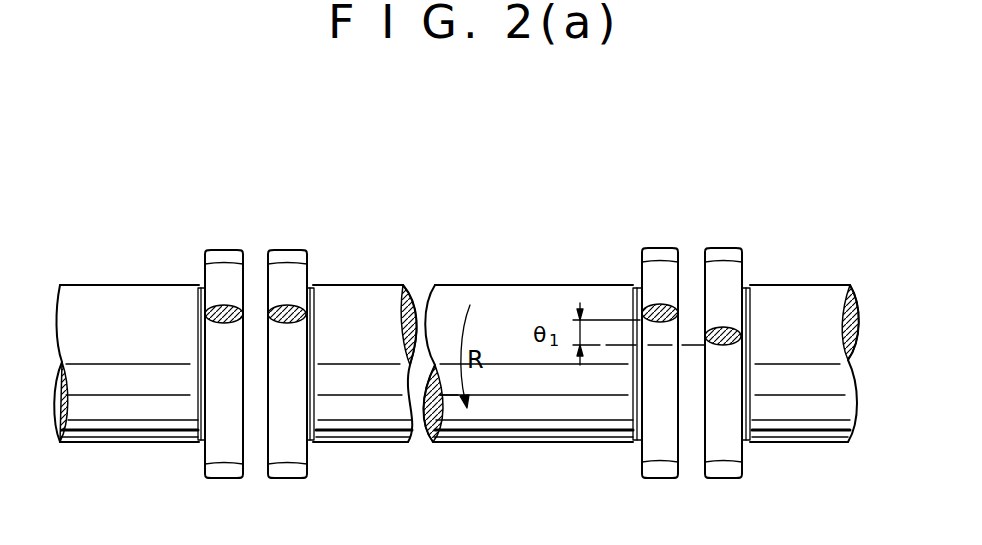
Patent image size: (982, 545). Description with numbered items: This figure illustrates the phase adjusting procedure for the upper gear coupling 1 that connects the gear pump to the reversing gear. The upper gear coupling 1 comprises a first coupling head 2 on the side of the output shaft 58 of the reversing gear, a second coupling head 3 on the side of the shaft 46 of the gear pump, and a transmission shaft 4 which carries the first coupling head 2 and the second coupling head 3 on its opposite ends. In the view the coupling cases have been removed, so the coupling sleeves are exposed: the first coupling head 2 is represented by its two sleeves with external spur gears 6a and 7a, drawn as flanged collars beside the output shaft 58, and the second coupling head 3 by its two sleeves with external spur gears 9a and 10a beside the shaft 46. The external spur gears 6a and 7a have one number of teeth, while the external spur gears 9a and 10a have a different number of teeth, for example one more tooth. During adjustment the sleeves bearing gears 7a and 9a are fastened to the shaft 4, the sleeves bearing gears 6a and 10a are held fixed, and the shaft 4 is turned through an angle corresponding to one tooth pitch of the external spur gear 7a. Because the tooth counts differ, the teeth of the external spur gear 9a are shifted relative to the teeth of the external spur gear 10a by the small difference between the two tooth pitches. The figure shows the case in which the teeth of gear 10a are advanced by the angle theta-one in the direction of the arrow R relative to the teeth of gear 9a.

The upper gear coupling 1 is at (588, 176).
The first coupling head 2 is at (263, 333).
The second coupling head 3 is at (689, 334).
The transmission shaft 4 is at (487, 285).
The output shaft 58 is at (131, 285).
The shaft 46 is at (808, 285).
The external spur gear 6a is at (205, 398).
The external spur gear 7a is at (308, 400).
The external spur gear 9a is at (642, 398).
The external spur gear 10a is at (742, 398).